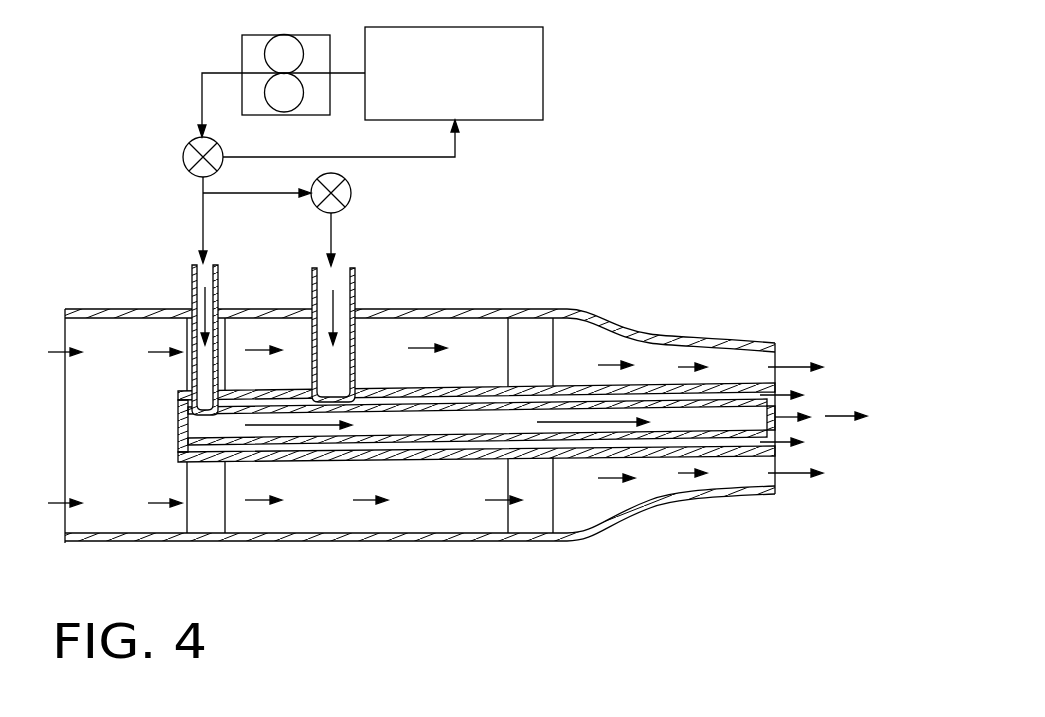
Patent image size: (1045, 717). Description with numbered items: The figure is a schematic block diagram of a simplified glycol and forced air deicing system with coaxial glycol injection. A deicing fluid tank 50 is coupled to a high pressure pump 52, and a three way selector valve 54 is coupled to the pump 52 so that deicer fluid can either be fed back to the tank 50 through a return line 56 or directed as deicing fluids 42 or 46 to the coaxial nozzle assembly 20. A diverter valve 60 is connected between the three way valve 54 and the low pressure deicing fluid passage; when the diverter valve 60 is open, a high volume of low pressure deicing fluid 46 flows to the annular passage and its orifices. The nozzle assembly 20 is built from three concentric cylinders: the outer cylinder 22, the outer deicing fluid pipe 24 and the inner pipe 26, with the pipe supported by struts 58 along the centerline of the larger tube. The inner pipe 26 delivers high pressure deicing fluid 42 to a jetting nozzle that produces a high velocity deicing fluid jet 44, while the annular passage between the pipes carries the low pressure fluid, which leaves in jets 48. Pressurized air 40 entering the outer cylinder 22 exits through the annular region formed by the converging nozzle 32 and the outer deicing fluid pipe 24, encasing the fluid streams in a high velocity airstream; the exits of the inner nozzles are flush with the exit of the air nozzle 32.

The coaxial nozzle assembly 20 is at (420, 436).
The outer cylinder 22 is at (438, 308).
The outer deicing fluid pipe 24 is at (428, 390).
The inner pipe 26 is at (508, 405).
The converging nozzle 32 is at (670, 335).
The pressurized air 40 is at (160, 353).
The high pressure deicing fluid 42 is at (203, 218).
The high velocity deicing fluid jet 44 is at (832, 417).
The low pressure deicing fluid 46 is at (334, 227).
The low pressure deicing fluid jets 48 is at (780, 394).
The deicing fluid tank 50 is at (469, 86).
The high pressure pump 52 is at (242, 48).
The three way selector valve 54 is at (183, 157).
The return line 56 is at (400, 157).
The struts 58 is at (200, 523).
The diverter valve 60 is at (352, 203).